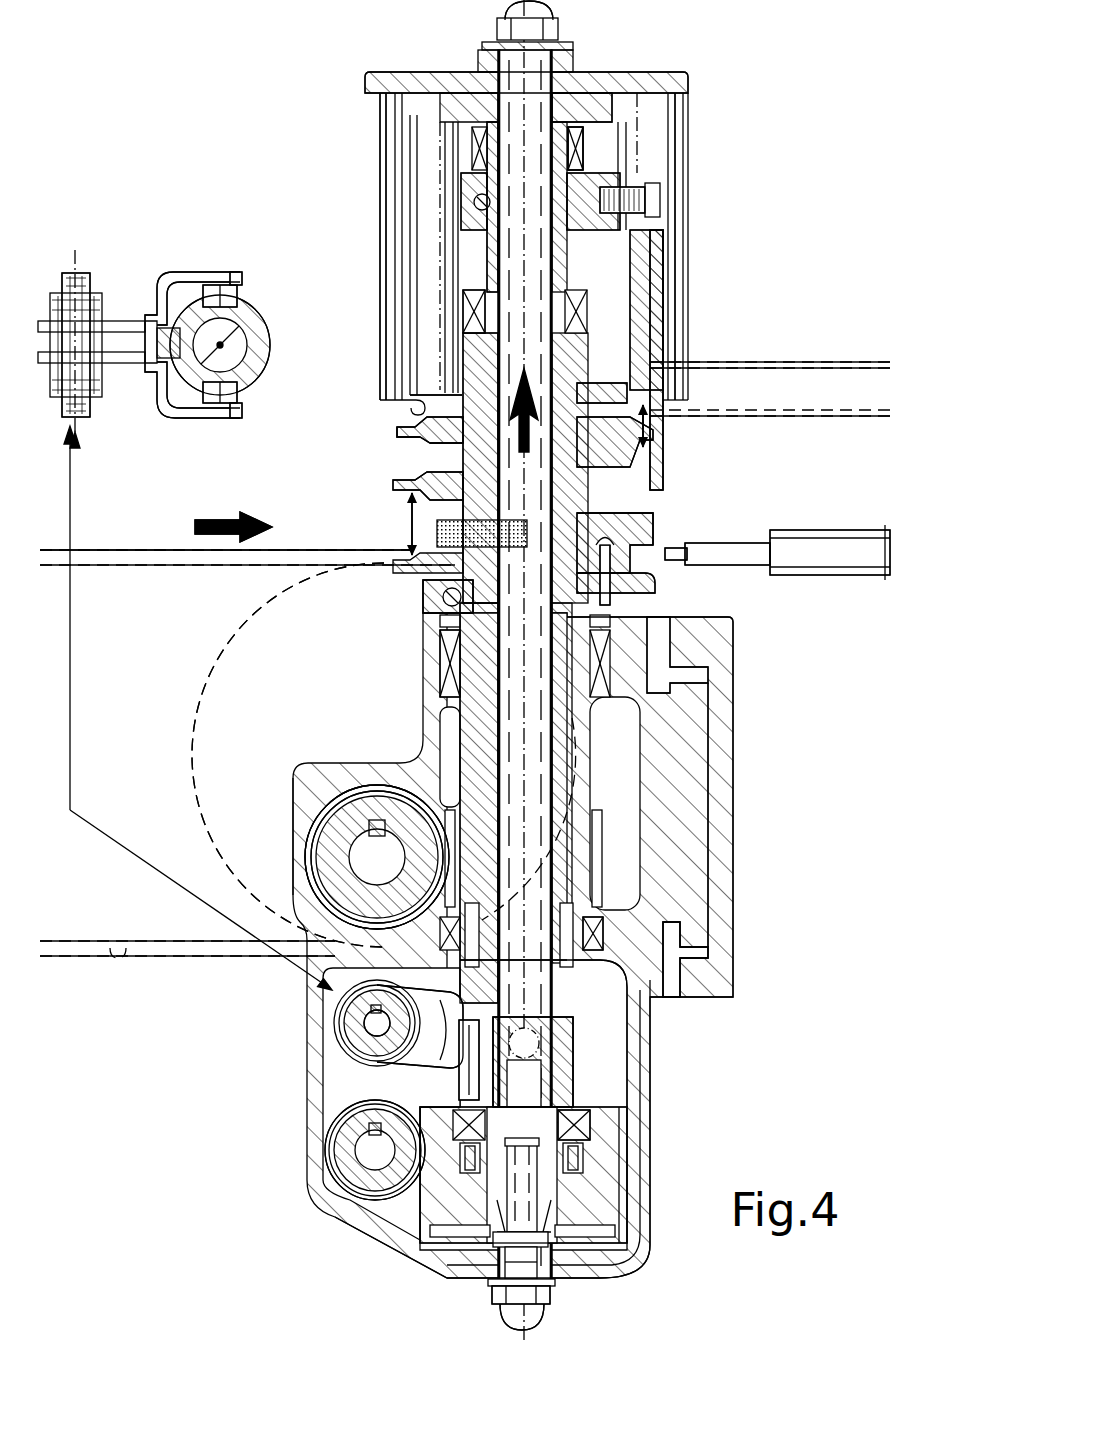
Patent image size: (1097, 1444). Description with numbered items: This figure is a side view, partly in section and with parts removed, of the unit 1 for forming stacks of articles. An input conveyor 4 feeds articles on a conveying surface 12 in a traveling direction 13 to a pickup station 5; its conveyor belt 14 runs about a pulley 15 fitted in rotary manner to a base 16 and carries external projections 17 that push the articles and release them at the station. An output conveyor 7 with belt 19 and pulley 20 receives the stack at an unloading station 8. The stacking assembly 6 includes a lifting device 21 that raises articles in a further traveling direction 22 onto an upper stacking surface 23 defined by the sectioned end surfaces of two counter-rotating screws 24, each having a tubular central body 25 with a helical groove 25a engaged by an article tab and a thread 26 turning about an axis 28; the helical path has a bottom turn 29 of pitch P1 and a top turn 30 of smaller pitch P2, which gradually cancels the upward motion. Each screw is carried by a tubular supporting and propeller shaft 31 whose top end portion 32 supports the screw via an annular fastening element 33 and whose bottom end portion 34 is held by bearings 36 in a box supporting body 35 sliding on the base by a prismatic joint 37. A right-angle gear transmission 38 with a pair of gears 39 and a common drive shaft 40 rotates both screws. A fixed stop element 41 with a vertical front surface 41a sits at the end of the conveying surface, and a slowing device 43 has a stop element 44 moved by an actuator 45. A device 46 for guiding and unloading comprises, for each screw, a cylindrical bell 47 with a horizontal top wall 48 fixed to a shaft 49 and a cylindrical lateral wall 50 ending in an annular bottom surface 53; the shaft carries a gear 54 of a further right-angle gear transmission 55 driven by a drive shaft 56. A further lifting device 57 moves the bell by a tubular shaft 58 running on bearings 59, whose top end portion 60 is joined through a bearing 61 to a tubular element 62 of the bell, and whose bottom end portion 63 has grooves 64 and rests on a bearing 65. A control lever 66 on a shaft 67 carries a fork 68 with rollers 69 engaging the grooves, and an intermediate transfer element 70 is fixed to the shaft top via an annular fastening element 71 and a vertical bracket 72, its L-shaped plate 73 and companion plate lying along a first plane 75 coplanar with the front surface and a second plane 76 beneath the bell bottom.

The unit for forming stacks 1 is at (742, 96).
The input conveyor 4 is at (162, 962).
The pickup station 5 is at (412, 520).
The stacking assembly 6 is at (696, 98).
The output conveyor 7 is at (791, 355).
The unloading station 8 is at (702, 320).
The conveying surface 12 is at (118, 545).
The traveling direction 13 is at (215, 517).
The conveyor belt 14 is at (187, 948).
The pulley 15 is at (190, 770).
The base 16 is at (722, 742).
The external projection 17 is at (148, 550).
The conveyor belt 19 is at (836, 418).
The pulley 20 is at (680, 386).
The lifting device 21 is at (690, 477).
The further traveling direction 22 is at (463, 458).
The upper stacking surface 23 is at (472, 362).
The screw 24 is at (612, 545).
The tubular central body 25 is at (620, 500).
The helical groove 25a is at (428, 438).
The thread 26 is at (438, 404).
The axis 28 is at (548, 1318).
The bottom turn 29 is at (690, 552).
The top turn 30 is at (397, 430).
The tubular supporting and propeller shaft 31 is at (455, 682).
The top end portion 32 is at (470, 340).
The annular fastening element 33 is at (428, 608).
The bottom end portion 34 is at (590, 857).
The box supporting body 35 is at (655, 1114).
The bearing 36 is at (612, 684).
The prismatic joint 37 is at (712, 960).
The right-angle gear transmission 38 is at (316, 922).
The pair of gears 39 is at (337, 932).
The drive shaft 40 is at (366, 852).
The fixed stop element 41 is at (642, 588).
The vertical front surface 41a is at (454, 664).
The slowing device 43 is at (796, 578).
The stop element 44 is at (400, 542).
The actuator 45 is at (853, 575).
The device for guiding and unloading stack 46 is at (679, 216).
The cylindrical bell 47 is at (377, 142).
The horizontal top wall 48 is at (565, 135).
The shaft 49 is at (510, 725).
The cylindrical lateral wall 50 is at (378, 202).
The annular bottom surface 53 is at (410, 390).
The gear 54 is at (590, 1197).
The further right-angle gear transmission 55 is at (395, 1072).
The drive shaft 56 is at (370, 1155).
The further lifting device 57 is at (612, 1057).
The tubular shaft 58 is at (560, 1010).
The bearing 59 is at (462, 292).
The top end portion 60 is at (575, 113).
The bearing 61 is at (588, 145).
The tubular element 62 is at (600, 122).
The bottom end portion 63 is at (250, 330).
The groove 64 is at (242, 300).
The bearing 65 is at (582, 1128).
The control lever 66 is at (118, 308).
The shaft 67 is at (92, 272).
The fork 68 is at (148, 396).
The roller 69 is at (222, 286).
The intermediate transfer element 70 is at (660, 467).
The annular fastening element 71 is at (470, 182).
The vertical bracket 72 is at (650, 232).
The L-shaped plate 73 is at (662, 325).
The first plane 75 is at (668, 446).
The second plane 76 is at (592, 380).
The pitch P1 is at (410, 528).
The pitch P2 is at (662, 430).